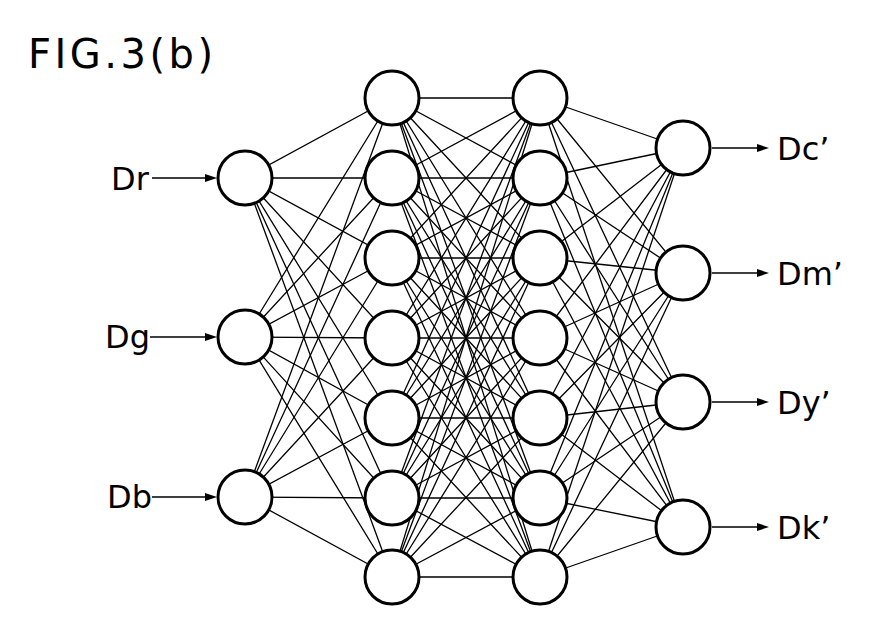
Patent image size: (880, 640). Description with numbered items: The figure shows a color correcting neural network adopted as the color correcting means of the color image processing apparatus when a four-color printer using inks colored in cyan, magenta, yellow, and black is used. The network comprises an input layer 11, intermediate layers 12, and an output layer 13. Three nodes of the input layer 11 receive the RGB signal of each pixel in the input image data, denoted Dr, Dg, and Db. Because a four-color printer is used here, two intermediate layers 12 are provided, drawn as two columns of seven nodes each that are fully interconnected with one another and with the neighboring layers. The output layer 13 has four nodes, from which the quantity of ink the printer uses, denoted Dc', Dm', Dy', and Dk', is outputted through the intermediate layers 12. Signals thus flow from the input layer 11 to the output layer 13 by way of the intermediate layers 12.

The input layer 11 is at (247, 150).
The intermediate layer 12 is at (513, 80).
The output layer 13 is at (699, 126).